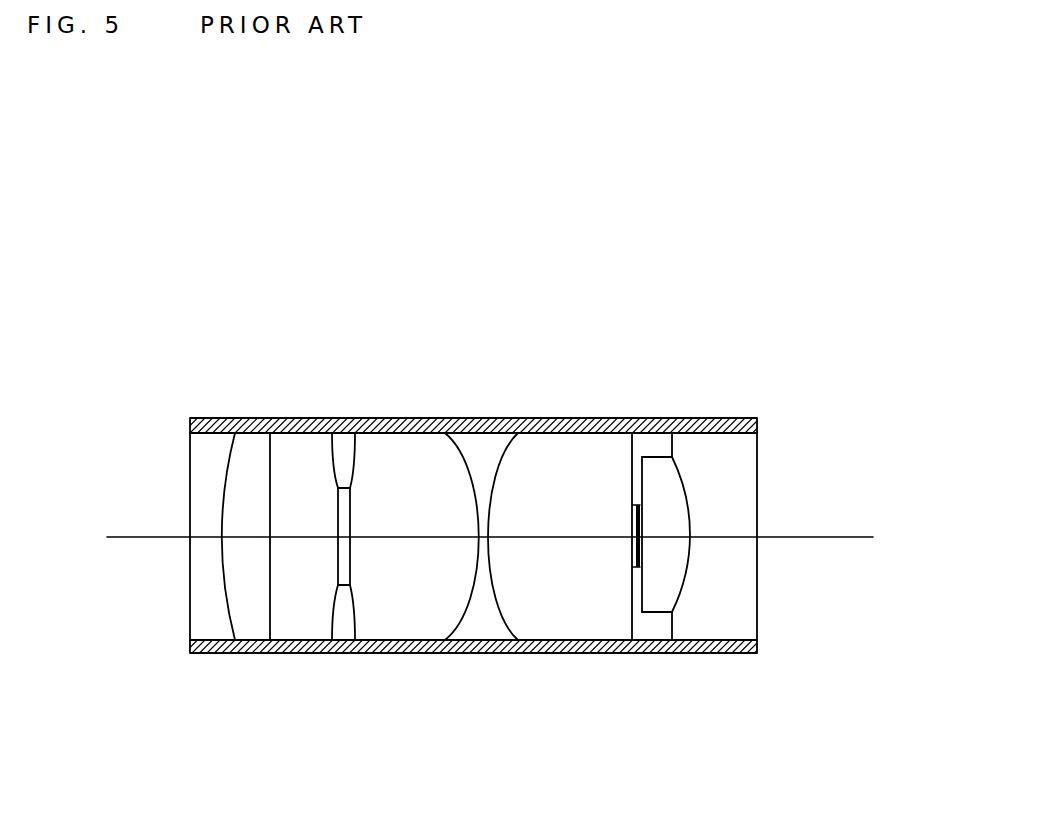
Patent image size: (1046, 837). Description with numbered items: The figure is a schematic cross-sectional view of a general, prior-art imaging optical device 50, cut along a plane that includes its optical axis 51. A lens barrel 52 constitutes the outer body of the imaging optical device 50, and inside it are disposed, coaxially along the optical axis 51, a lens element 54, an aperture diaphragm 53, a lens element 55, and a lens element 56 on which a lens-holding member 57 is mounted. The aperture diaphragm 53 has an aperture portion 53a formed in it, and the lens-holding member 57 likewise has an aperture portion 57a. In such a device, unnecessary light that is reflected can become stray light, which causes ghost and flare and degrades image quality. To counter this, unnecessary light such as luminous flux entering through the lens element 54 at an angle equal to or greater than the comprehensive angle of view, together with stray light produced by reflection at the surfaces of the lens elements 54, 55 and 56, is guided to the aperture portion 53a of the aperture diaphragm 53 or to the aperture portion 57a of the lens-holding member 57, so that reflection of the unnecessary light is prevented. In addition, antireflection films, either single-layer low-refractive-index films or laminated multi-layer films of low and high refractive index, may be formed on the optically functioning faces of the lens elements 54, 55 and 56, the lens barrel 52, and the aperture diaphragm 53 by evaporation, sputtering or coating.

The imaging optical device 50 is at (544, 357).
The optical axis 51 is at (780, 538).
The lens barrel 52 is at (193, 418).
The aperture diaphragm 53 is at (340, 443).
The aperture portion 53a is at (338, 565).
The lens element 54 is at (243, 625).
The lens element 55 is at (480, 630).
The lens element 56 is at (677, 515).
The lens-holding member 57 is at (642, 443).
The aperture portion 57a is at (633, 545).